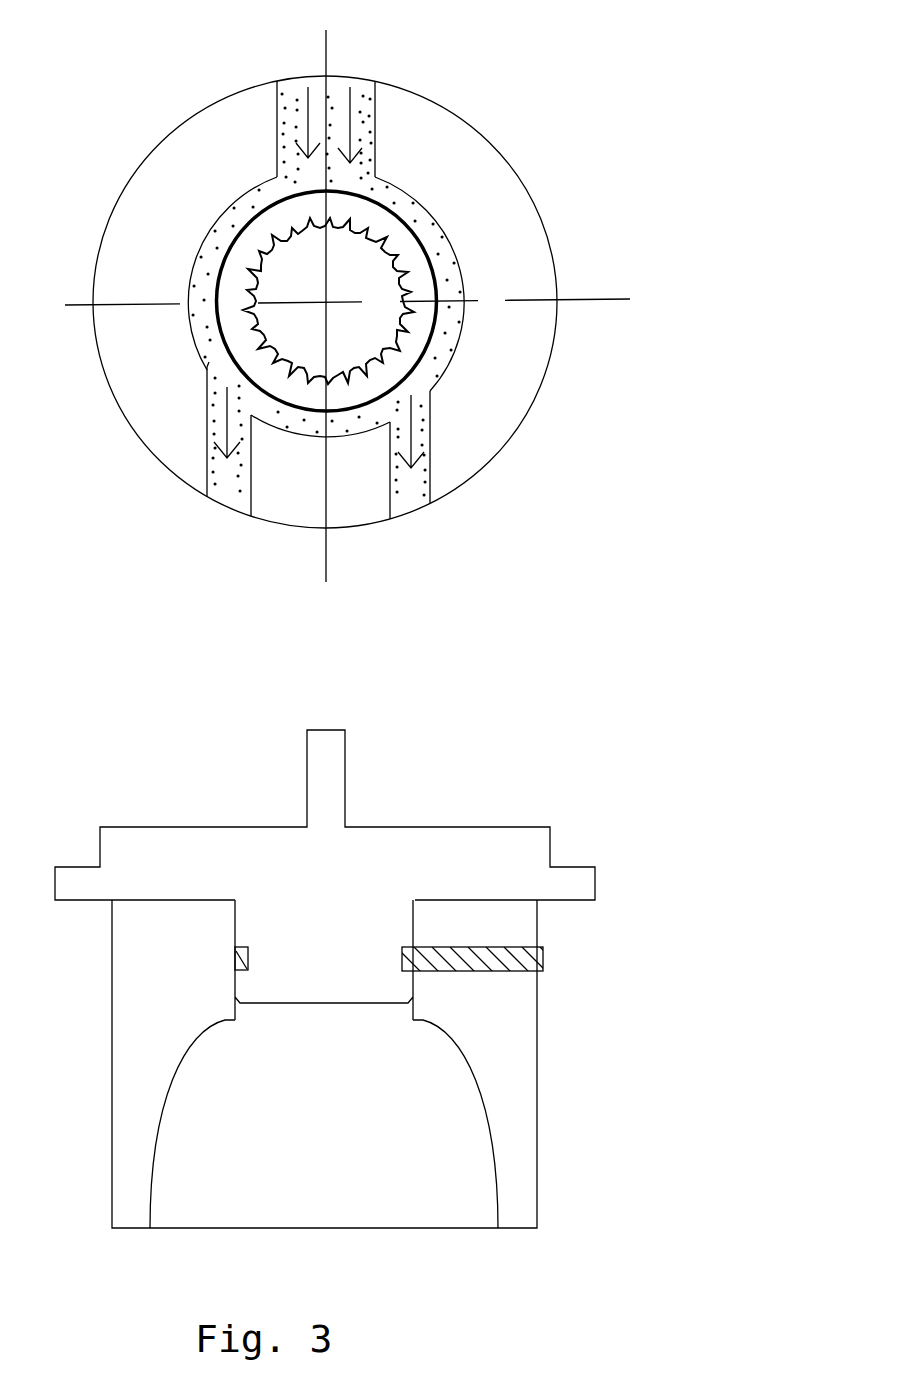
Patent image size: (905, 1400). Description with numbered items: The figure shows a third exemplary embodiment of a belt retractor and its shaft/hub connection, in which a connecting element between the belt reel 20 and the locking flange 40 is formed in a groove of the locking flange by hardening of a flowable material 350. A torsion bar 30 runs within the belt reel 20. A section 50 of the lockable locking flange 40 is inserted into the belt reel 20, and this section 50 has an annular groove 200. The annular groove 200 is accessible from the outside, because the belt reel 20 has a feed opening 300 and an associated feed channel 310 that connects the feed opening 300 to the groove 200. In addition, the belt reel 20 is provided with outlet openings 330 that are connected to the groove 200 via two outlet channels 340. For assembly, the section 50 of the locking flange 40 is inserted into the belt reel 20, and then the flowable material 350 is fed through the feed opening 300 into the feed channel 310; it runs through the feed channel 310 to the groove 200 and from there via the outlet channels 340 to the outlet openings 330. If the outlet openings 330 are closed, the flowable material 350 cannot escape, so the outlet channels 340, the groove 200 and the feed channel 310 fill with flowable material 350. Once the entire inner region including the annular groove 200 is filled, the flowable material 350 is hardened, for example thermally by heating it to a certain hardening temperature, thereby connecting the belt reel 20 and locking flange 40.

The belt reel 20 is at (486, 179).
The torsion bar 30 is at (190, 1052).
The locking flange 40 is at (453, 860).
The section of the locking flange 50 is at (413, 340).
The annular groove 200 is at (402, 950).
The feed opening 300 is at (293, 77).
The feed channel 310 is at (292, 126).
The outlet openings 330 is at (240, 515).
The outlet channels 340 is at (222, 480).
The flowable material 350 is at (362, 177).